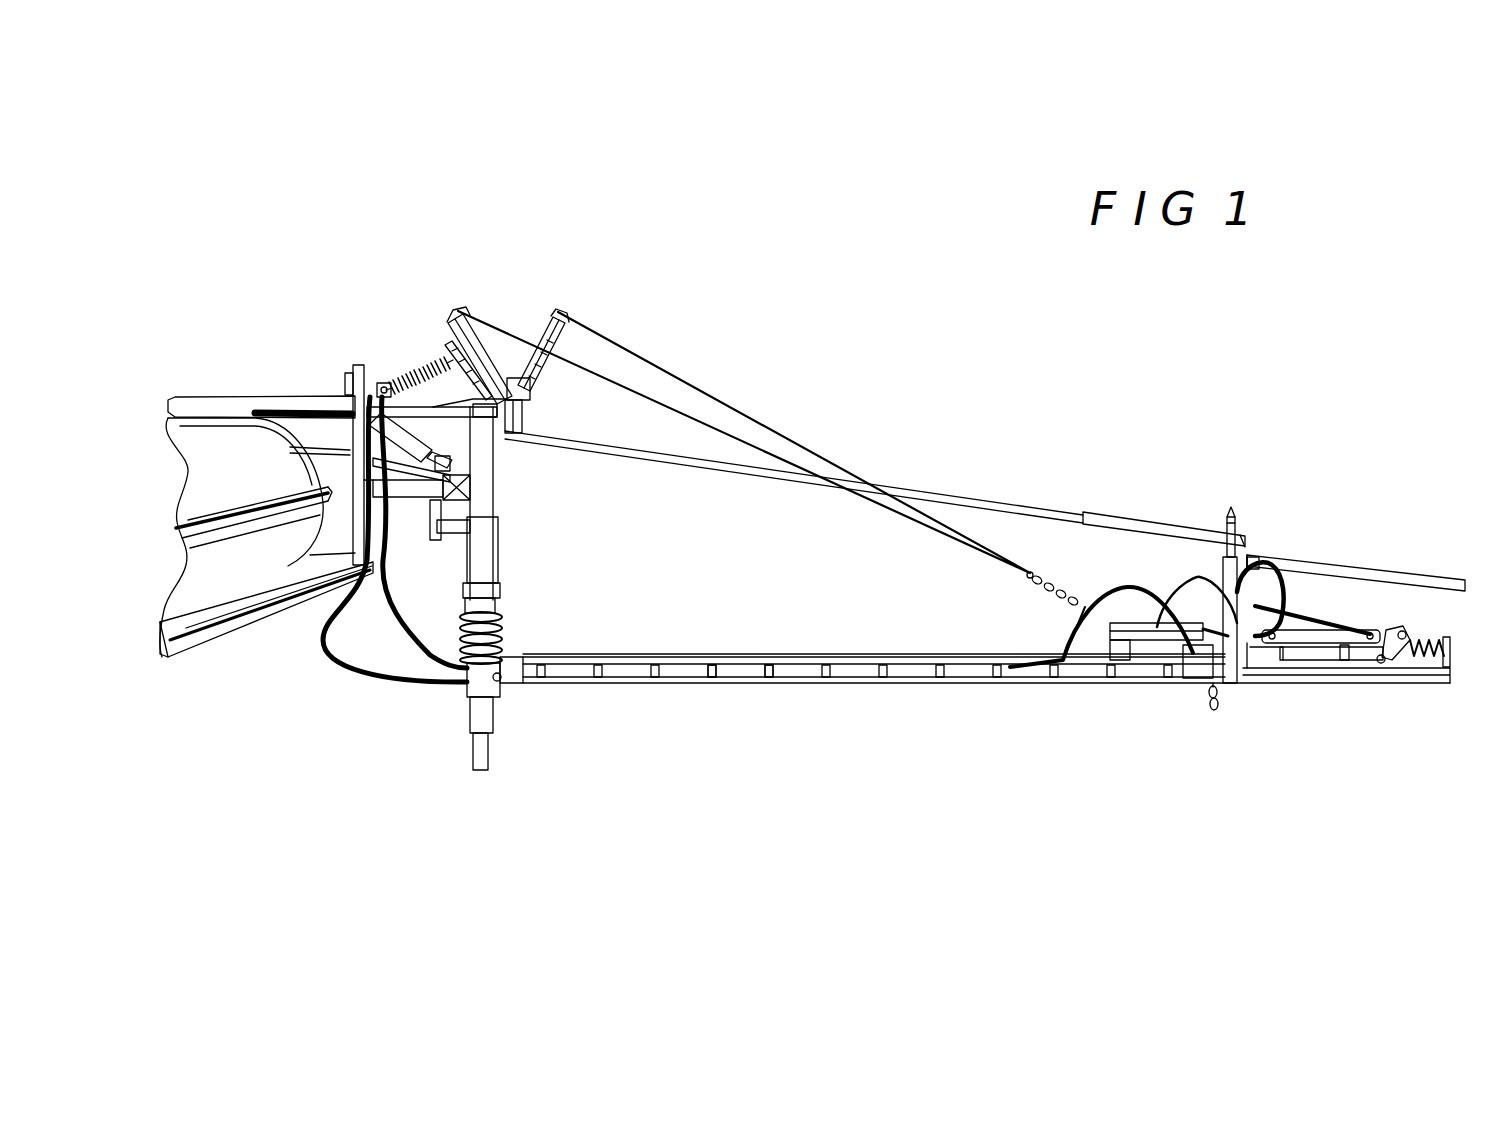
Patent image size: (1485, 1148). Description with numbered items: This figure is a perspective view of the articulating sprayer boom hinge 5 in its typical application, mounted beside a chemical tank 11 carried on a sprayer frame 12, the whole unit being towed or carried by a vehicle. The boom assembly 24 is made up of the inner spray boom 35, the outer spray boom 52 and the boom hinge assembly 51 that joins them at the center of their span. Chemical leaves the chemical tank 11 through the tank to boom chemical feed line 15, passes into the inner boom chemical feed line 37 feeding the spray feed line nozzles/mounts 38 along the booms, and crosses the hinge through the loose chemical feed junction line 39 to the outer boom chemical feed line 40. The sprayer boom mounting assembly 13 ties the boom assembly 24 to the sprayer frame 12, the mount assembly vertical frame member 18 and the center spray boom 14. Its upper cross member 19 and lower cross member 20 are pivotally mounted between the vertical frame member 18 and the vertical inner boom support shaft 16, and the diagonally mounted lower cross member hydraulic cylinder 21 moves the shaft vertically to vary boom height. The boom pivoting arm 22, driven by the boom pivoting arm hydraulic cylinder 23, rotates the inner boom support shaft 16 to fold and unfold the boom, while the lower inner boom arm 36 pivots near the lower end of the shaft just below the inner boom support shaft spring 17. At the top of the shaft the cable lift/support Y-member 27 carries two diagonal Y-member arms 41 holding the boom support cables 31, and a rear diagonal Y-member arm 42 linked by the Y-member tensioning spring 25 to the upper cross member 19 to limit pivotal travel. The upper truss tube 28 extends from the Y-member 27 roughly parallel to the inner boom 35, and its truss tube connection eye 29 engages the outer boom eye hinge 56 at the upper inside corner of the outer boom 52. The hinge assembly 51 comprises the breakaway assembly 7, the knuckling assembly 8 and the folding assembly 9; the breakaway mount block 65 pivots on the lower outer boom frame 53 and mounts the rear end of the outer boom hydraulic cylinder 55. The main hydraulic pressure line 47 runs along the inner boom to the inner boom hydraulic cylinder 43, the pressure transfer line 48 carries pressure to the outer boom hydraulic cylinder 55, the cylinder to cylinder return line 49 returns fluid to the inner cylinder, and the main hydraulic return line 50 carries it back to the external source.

The articulating sprayer boom hinge 5 is at (1003, 421).
The breakaway assembly 7 is at (1409, 711).
The knuckling assembly 8 is at (1228, 696).
The folding assembly 9 is at (1210, 706).
The chemical tank 11 is at (211, 446).
The sprayer frame 12 is at (223, 653).
The sprayer boom mounting assembly 13 is at (353, 325).
The center spray boom 14 is at (240, 395).
The tank to boom chemical feed line 15 is at (328, 663).
The inner boom support shaft 16 is at (506, 542).
The inner boom support shaft spring 17 is at (520, 619).
The mount assembly vertical frame member 18 is at (368, 513).
The upper cross member 19 is at (392, 403).
The lower cross member 20 is at (447, 488).
The lower cross member hydraulic cylinder 21 is at (422, 436).
The boom pivoting arm 22 is at (441, 528).
The boom pivoting arm hydraulic cylinder 23 is at (410, 506).
The boom assembly 24 is at (868, 761).
The Y-member tensioning spring 25 is at (411, 364).
The cable lift/support Y-member 27 is at (566, 303).
The upper truss tube 28 is at (893, 483).
The truss tube connection eye 29 is at (1124, 514).
The boom support cables 31 is at (698, 420).
The inner spray boom 35 is at (636, 732).
The lower inner boom arm 36 is at (697, 686).
The inner boom chemical feed line 37 is at (791, 673).
The spray feed line nozzles/mounts 38 is at (593, 683).
The chemical feed junction line 39 is at (1217, 574).
The outer boom chemical feed line 40 is at (1313, 660).
The diagonal Y-member arms 41 is at (541, 327).
The rear diagonal Y-member arm 42 is at (464, 317).
The inner boom hydraulic cylinder 43 is at (1158, 641).
The main hydraulic pressure line 47 is at (1083, 607).
The pressure transfer line 48 is at (1296, 596).
The cylinder to cylinder return line 49 is at (1254, 557).
The main hydraulic return line 50 is at (1060, 623).
The boom hinge assembly 51 is at (1175, 575).
The outer spray boom 52 is at (1439, 683).
The lower outer boom frame 53 is at (1409, 563).
The outer boom hydraulic cylinder 55 is at (1304, 637).
The outer boom eye hinge 56 is at (1227, 506).
The breakaway mount block 65 is at (1401, 654).